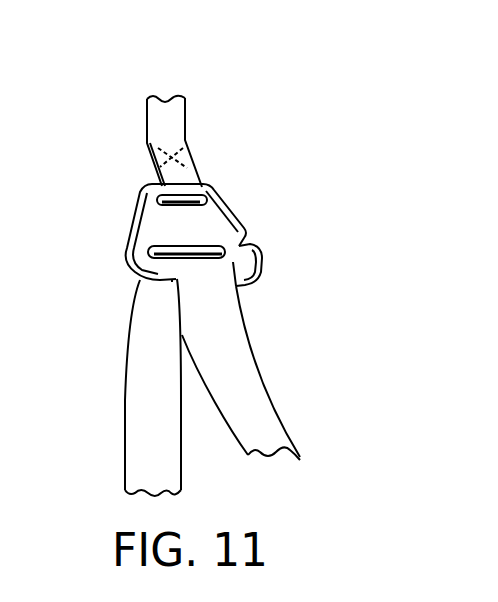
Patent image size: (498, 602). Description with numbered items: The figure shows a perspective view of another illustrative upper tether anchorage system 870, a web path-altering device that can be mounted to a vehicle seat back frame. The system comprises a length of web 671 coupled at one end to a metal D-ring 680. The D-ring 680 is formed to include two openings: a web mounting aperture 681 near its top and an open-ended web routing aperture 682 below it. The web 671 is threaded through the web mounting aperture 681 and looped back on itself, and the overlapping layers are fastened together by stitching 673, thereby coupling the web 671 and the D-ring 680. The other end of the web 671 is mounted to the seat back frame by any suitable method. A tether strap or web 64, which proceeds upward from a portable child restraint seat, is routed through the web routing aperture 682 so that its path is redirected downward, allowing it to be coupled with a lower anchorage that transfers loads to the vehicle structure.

The upper tether anchorage system 870 is at (146, 83).
The length of web 671 is at (152, 123).
The stitching 673 is at (184, 153).
The D-ring 680 is at (137, 233).
The web mounting aperture 681 is at (209, 198).
The web routing aperture 682 is at (242, 242).
The web 64 is at (144, 350).